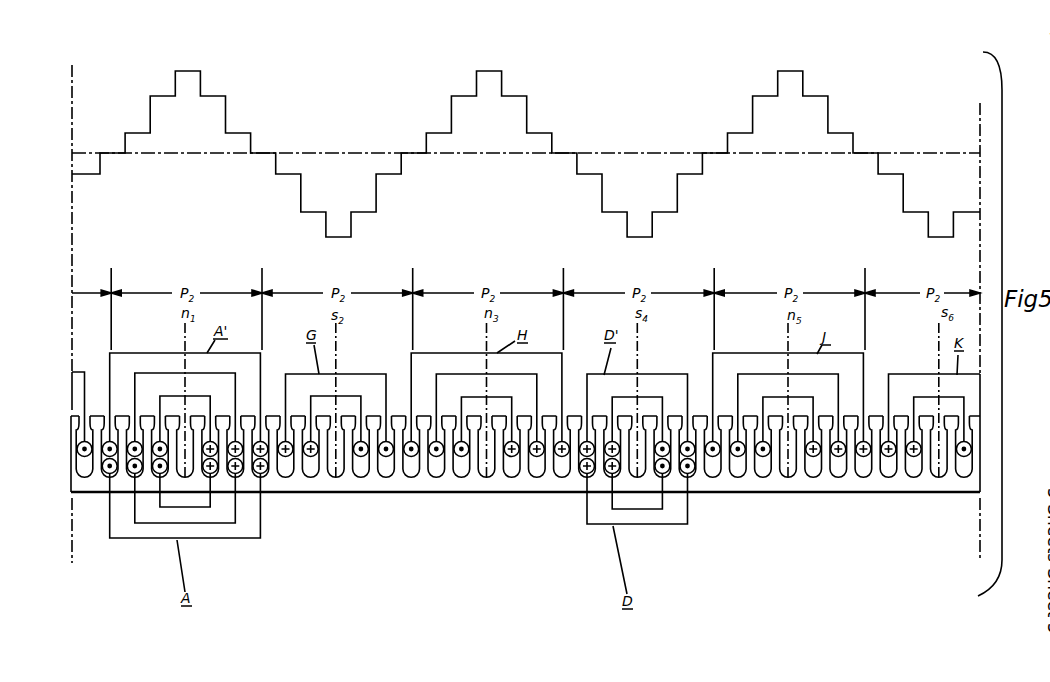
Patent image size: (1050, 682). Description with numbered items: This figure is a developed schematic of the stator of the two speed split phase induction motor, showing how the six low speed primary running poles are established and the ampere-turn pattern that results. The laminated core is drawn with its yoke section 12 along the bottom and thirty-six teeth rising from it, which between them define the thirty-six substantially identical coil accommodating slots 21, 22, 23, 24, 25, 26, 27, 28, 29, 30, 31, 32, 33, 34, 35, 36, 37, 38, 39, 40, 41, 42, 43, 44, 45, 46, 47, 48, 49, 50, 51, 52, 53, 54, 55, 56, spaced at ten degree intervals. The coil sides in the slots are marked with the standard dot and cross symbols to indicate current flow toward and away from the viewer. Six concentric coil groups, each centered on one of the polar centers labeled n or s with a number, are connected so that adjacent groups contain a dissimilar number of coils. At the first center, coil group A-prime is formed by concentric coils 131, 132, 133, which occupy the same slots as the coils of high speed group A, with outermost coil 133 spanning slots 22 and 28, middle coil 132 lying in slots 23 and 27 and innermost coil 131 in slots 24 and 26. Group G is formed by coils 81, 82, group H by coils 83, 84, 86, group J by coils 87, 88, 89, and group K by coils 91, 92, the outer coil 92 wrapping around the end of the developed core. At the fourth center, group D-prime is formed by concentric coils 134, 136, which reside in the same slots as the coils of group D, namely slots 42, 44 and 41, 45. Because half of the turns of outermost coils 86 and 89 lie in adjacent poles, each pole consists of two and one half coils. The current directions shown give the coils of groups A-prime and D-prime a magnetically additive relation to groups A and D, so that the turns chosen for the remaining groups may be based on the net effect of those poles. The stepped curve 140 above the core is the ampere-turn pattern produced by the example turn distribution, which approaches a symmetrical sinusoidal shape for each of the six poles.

The yoke section 12 is at (78, 483).
The ampere-turn pattern 140 is at (202, 86).
The coil accommodating slot 21 is at (84, 456).
The coil accommodating slot 22 is at (110, 474).
The coil accommodating slot 23 is at (135, 474).
The coil accommodating slot 24 is at (160, 474).
The coil accommodating slot 25 is at (185, 478).
The coil accommodating slot 26 is at (210, 474).
The coil accommodating slot 27 is at (235, 474).
The coil accommodating slot 28 is at (260, 474).
The coil accommodating slot 29 is at (286, 456).
The coil accommodating slot 30 is at (311, 456).
The coil accommodating slot 31 is at (336, 478).
The coil accommodating slot 32 is at (361, 456).
The coil accommodating slot 33 is at (386, 456).
The coil accommodating slot 34 is at (411, 456).
The coil accommodating slot 35 is at (436, 456).
The coil accommodating slot 36 is at (461, 456).
The coil accommodating slot 37 is at (486, 478).
The coil accommodating slot 38 is at (512, 456).
The coil accommodating slot 39 is at (537, 456).
The coil accommodating slot 40 is at (562, 456).
The coil accommodating slot 41 is at (587, 474).
The coil accommodating slot 42 is at (612, 474).
The coil accommodating slot 43 is at (637, 478).
The coil accommodating slot 44 is at (662, 474).
The coil accommodating slot 45 is at (688, 474).
The coil accommodating slot 46 is at (713, 456).
The coil accommodating slot 47 is at (738, 456).
The coil accommodating slot 48 is at (763, 456).
The coil accommodating slot 49 is at (788, 478).
The coil accommodating slot 50 is at (813, 456).
The coil accommodating slot 51 is at (838, 456).
The coil accommodating slot 52 is at (863, 456).
The coil accommodating slot 53 is at (888, 456).
The coil accommodating slot 54 is at (914, 456).
The coil accommodating slot 55 is at (939, 478).
The coil accommodating slot 56 is at (964, 456).
The concentric coil 131 is at (197, 396).
The concentric coil 132 is at (206, 373).
The concentric coil 133 is at (242, 353).
The coil 81 is at (340, 396).
The coil 82 is at (358, 374).
The coil 83 is at (472, 397).
The coil 84 is at (468, 375).
The coil 86 is at (445, 353).
The concentric coil 134 is at (647, 397).
The concentric coil 136 is at (652, 375).
The coil 87 is at (771, 398).
The coil 88 is at (763, 375).
The coil 89 is at (742, 354).
The coil 91 is at (929, 398).
The coil 92 is at (900, 375).